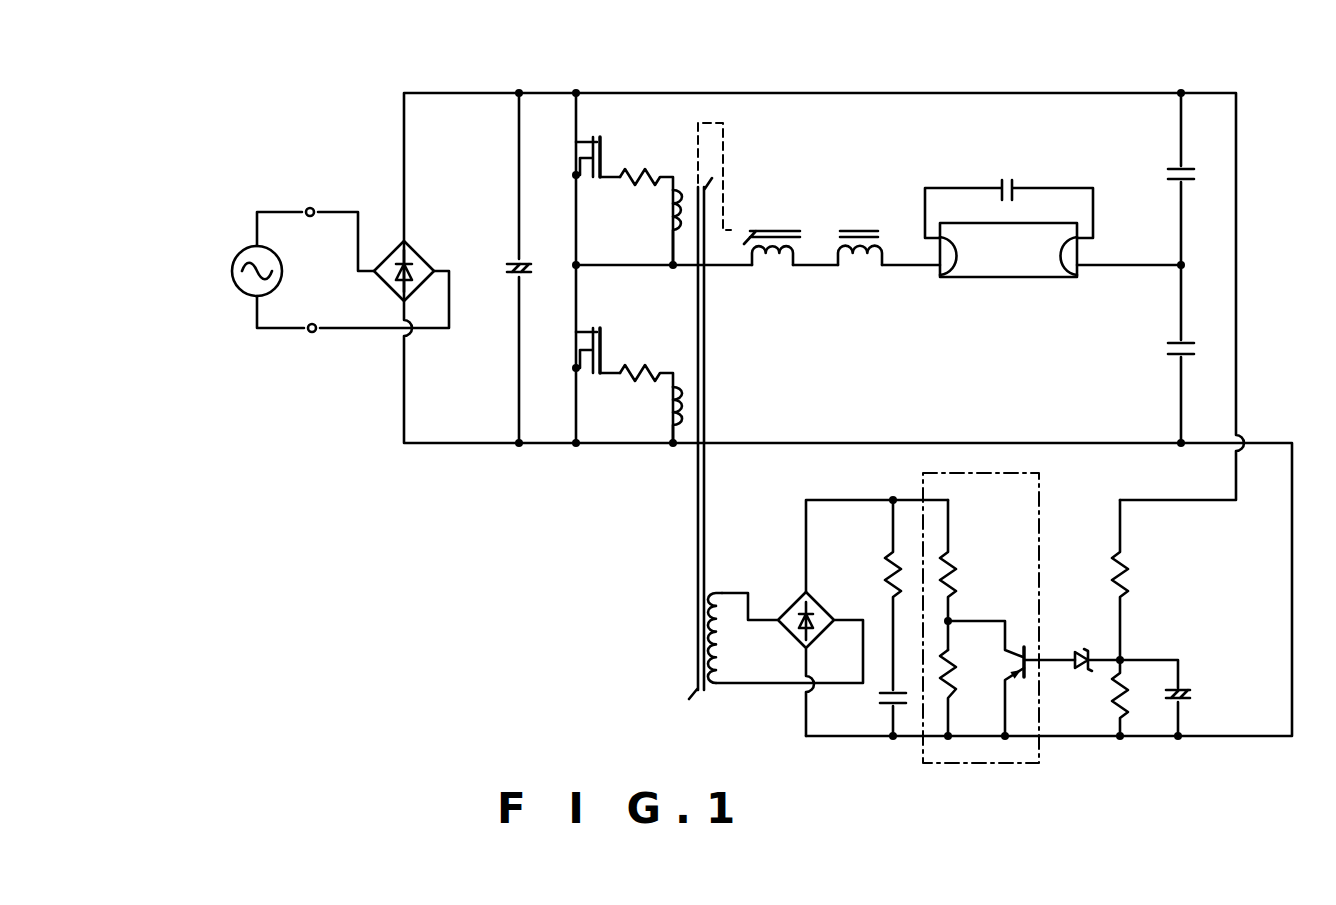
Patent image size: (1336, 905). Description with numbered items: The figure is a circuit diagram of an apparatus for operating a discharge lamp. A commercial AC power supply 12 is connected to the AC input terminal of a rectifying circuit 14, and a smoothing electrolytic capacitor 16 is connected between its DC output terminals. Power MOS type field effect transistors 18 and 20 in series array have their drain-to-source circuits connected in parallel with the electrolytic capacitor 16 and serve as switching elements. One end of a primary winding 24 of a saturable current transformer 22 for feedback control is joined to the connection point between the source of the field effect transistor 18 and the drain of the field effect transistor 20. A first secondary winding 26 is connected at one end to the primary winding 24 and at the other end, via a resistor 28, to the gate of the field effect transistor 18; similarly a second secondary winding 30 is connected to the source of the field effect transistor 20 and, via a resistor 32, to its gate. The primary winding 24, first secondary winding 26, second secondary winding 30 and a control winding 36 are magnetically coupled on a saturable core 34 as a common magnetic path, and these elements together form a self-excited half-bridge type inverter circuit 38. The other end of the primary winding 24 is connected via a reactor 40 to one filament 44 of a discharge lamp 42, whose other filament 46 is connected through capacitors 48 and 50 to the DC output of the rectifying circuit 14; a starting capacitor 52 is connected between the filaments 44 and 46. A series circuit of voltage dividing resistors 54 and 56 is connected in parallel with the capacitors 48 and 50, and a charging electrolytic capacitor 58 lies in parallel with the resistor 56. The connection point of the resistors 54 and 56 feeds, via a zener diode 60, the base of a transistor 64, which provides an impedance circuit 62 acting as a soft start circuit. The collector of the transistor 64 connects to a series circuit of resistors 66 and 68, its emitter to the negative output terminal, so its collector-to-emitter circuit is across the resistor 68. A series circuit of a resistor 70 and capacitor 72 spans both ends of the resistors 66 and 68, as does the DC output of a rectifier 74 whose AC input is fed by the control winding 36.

The commercial AC power supply 12 is at (239, 253).
The rectifying circuit 14 is at (420, 256).
The electrolytic capacitor 16 is at (506, 270).
The field effect transistor 18 is at (605, 152).
The field effect transistor 20 is at (604, 342).
The saturable current transformer 22 is at (688, 448).
The primary winding 24 is at (776, 270).
The first secondary winding 26 is at (677, 212).
The resistor 28 is at (633, 177).
The second secondary winding 30 is at (677, 405).
The resistor 32 is at (633, 373).
The saturable core 34 is at (697, 561).
The control winding 36 is at (722, 656).
The self-excited half-bridge type inverter circuit 38 is at (684, 138).
The reactor 40 is at (865, 270).
The discharge lamp 42 is at (1010, 278).
The filament 44 is at (948, 278).
The filament 46 is at (1067, 278).
The capacitor 48 is at (1169, 169).
The capacitor 50 is at (1166, 343).
The starting capacitor 52 is at (1000, 181).
The voltage dividing resistor 54 is at (1130, 576).
The voltage dividing resistor 56 is at (1112, 700).
The electrolytic capacitor 58 is at (1192, 697).
The zener diode 60 is at (1079, 652).
The impedance circuit 62 is at (955, 765).
The transistor 64 is at (1028, 648).
The resistor 66 is at (957, 576).
The resistor 68 is at (956, 688).
The resistor 70 is at (885, 579).
The capacitor 72 is at (878, 703).
The rectifier 74 is at (795, 602).